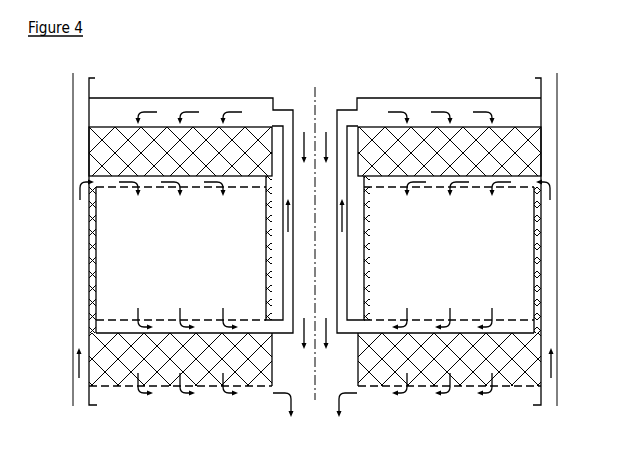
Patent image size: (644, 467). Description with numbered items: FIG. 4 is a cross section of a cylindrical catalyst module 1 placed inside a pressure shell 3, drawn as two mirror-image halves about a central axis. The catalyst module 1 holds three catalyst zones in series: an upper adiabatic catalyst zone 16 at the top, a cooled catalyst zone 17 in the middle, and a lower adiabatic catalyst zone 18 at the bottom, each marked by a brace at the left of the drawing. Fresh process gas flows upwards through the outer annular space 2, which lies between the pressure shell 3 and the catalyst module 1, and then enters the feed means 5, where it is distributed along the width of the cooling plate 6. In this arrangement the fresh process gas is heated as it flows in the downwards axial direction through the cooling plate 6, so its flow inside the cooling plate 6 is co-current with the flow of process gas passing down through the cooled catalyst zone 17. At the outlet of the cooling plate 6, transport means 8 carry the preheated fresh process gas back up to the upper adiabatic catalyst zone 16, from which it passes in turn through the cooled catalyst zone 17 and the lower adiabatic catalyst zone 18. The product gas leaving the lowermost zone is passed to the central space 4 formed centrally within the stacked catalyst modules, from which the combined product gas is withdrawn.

The catalyst module 1 is at (555, 85).
The outer annular space 2 is at (548, 117).
The pressure shell 3 is at (557, 149).
The central space 4 is at (342, 363).
The feed means 5 is at (519, 183).
The cooling plate 6 is at (497, 250).
The transport means 8 is at (344, 327).
The upper adiabatic catalyst zone 16 is at (53, 128).
The cooled catalyst zone 17 is at (53, 185).
The lower adiabatic catalyst zone 18 is at (53, 331).